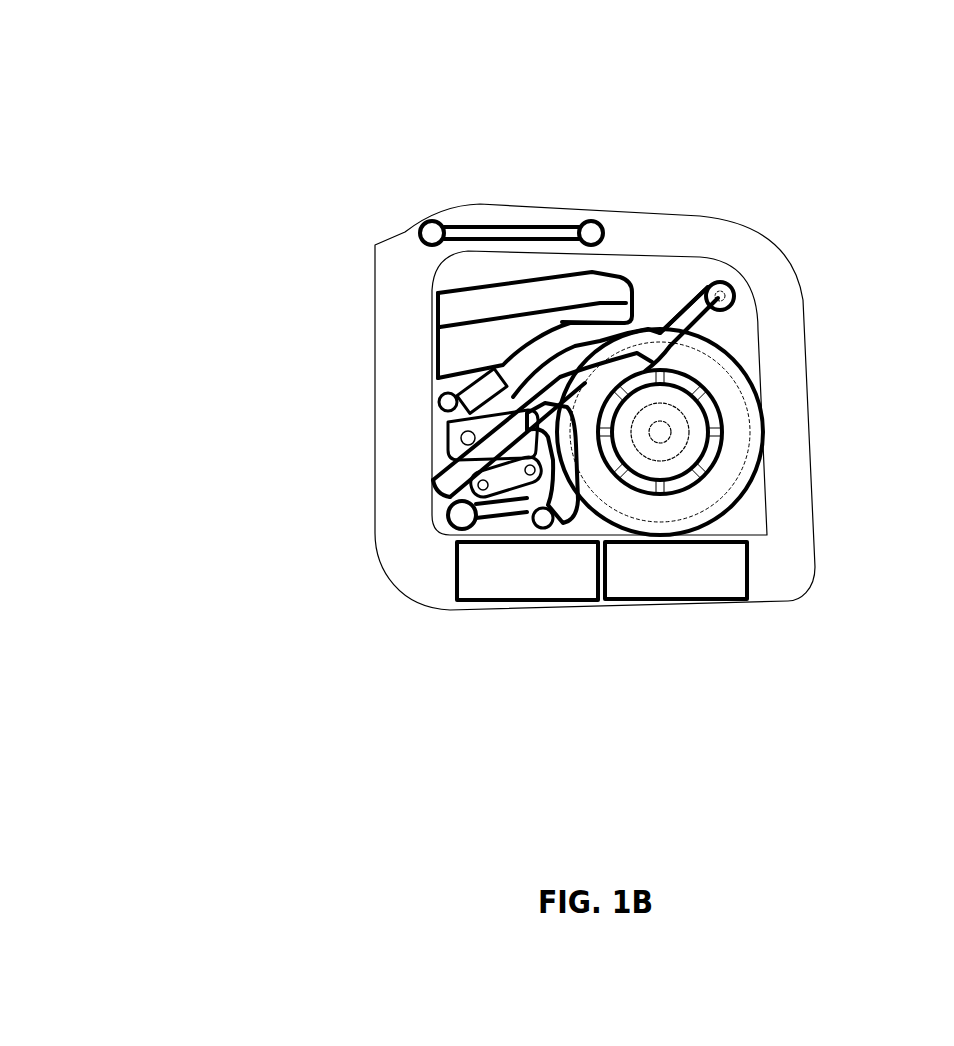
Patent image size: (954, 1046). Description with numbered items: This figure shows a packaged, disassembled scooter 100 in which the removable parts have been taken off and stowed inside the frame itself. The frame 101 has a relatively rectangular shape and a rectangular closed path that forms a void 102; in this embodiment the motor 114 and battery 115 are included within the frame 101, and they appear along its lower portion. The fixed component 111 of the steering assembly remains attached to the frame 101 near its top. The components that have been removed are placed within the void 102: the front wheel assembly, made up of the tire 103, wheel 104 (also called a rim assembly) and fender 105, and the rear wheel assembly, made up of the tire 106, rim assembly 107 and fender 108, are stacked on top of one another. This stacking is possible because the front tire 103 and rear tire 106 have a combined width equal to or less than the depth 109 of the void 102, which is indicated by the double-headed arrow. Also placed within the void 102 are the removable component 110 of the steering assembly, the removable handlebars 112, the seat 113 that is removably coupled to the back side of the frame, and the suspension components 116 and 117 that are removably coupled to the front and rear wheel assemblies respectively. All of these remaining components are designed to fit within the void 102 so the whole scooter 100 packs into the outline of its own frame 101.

The scooter 100 is at (169, 47).
The frame 101 is at (795, 415).
The void 102 is at (752, 316).
The tire 103 is at (455, 520).
The wheel 104 is at (660, 432).
The fender 105 is at (660, 432).
The tire 106 is at (535, 325).
The rim assembly 107 is at (573, 342).
The fender 108 is at (542, 425).
The depth 109 is at (648, 292).
The removable component 110 is at (473, 391).
The fixed component 111 is at (419, 233).
The removable handlebars 112 is at (493, 435).
The seat 113 is at (506, 477).
The motor 114 is at (490, 588).
The battery 115 is at (675, 587).
The suspension component 116 is at (500, 513).
The suspension component 117 is at (552, 463).